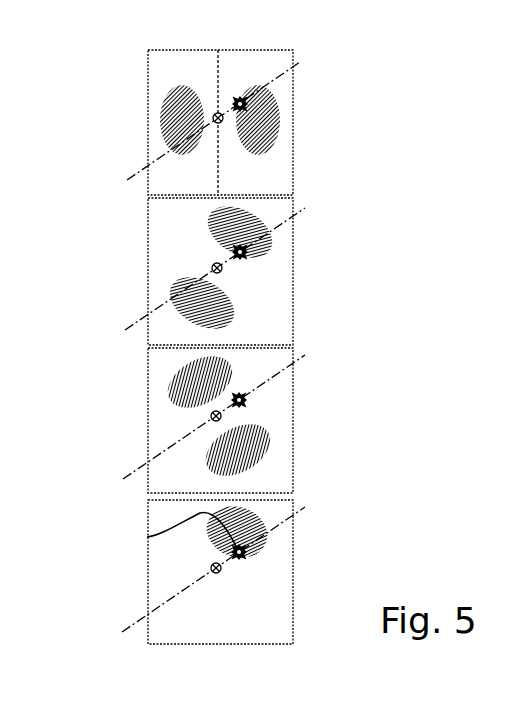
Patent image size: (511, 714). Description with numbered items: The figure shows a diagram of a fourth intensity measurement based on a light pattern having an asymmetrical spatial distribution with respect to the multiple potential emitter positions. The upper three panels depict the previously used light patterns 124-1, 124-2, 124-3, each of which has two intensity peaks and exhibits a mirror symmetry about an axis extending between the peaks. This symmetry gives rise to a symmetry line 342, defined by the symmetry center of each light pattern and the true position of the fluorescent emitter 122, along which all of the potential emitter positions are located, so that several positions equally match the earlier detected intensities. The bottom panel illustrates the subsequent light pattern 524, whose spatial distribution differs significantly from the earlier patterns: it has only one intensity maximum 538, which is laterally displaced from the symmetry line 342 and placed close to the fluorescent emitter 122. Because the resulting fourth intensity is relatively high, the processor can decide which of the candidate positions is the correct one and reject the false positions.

The first light pattern 124-1 is at (130, 129).
The second light pattern 124-2 is at (136, 283).
The third light pattern 124-3 is at (168, 419).
The subsequent light pattern 524 is at (131, 568).
The intensity maximum 538 is at (147, 537).
The symmetry line 342 is at (303, 57).
The fluorescent emitter 122 is at (246, 105).